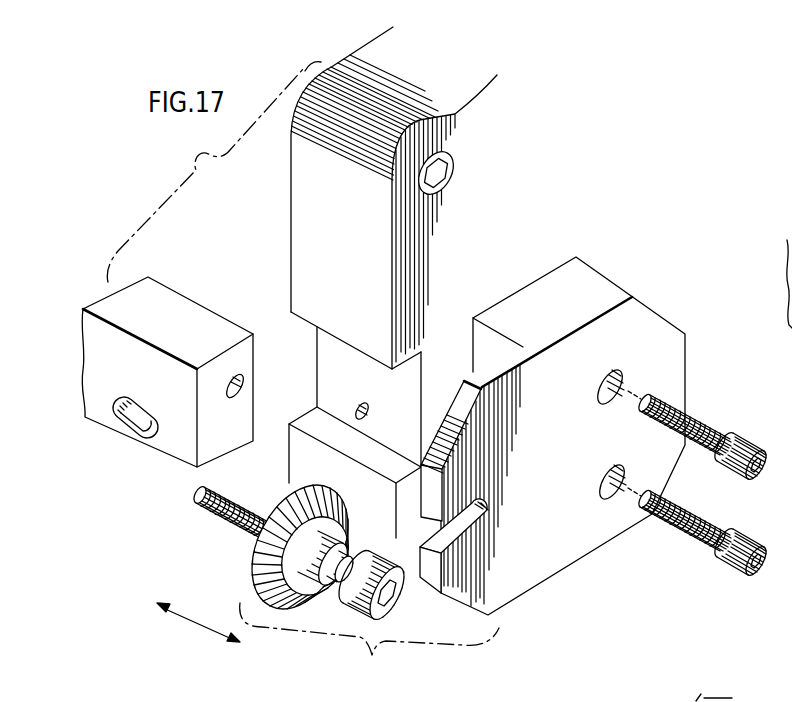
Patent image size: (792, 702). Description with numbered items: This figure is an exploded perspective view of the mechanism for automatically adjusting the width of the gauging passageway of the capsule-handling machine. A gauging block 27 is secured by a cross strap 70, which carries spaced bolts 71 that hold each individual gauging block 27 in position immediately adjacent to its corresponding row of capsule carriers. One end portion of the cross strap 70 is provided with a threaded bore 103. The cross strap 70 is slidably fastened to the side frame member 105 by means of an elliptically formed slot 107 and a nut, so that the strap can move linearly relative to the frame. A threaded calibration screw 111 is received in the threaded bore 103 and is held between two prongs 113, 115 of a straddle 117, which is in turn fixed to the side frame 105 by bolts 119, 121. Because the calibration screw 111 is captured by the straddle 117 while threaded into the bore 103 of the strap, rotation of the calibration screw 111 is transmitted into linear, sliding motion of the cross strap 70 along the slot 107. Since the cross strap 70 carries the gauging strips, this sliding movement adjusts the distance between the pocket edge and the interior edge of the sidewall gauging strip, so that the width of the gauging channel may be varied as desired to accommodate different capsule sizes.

The gauging block 27 is at (714, 688).
The cross strap 70 is at (142, 352).
The bolt 71 is at (789, 286).
The threaded bore 103 is at (242, 384).
The side frame member 105 is at (437, 223).
The elliptically formed slot 107 is at (122, 426).
The calibration screw 111 is at (247, 563).
The prong 113 is at (437, 490).
The prong 115 is at (434, 578).
The straddle 117 is at (573, 538).
The bolt 119 is at (745, 447).
The bolt 121 is at (751, 545).